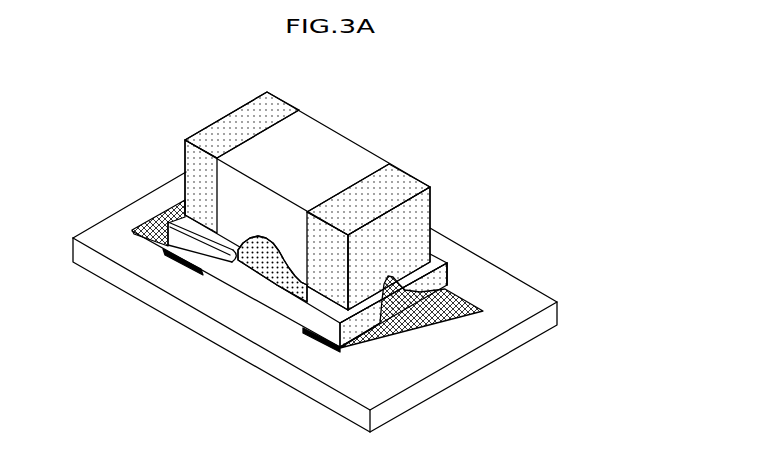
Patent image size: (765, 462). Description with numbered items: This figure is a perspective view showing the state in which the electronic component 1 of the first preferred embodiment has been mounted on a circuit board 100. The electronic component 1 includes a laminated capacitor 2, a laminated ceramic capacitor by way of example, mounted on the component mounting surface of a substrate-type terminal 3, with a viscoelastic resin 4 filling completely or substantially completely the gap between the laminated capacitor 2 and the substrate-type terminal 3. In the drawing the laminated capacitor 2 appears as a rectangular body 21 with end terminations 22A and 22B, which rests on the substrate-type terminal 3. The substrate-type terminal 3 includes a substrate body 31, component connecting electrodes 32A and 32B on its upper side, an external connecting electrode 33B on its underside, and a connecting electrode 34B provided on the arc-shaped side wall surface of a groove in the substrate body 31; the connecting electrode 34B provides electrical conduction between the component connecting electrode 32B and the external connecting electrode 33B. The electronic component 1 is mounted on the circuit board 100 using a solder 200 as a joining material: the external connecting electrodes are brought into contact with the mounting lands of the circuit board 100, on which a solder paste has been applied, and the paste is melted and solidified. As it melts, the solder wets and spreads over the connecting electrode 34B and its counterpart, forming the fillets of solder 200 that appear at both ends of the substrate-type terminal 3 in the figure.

The electronic component 1 is at (518, 114).
The laminated capacitor 2 is at (357, 126).
The element body 21 is at (361, 150).
The first external electrode 22A is at (276, 106).
The second external electrode 22B is at (403, 179).
The substrate-type terminal 3 is at (222, 284).
The substrate body 31 is at (255, 286).
The component connecting electrode 32A is at (178, 222).
The component connecting electrode 32B is at (433, 260).
The external connecting electrode 33B is at (393, 370).
The connecting electrode 34B is at (447, 283).
The viscoelastic resin 4 is at (266, 280).
The circuit board 100 is at (566, 320).
The solder 200 is at (130, 207).